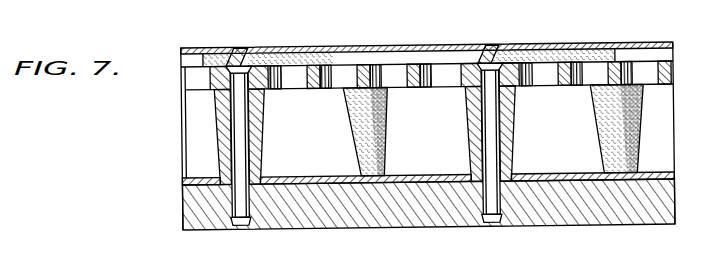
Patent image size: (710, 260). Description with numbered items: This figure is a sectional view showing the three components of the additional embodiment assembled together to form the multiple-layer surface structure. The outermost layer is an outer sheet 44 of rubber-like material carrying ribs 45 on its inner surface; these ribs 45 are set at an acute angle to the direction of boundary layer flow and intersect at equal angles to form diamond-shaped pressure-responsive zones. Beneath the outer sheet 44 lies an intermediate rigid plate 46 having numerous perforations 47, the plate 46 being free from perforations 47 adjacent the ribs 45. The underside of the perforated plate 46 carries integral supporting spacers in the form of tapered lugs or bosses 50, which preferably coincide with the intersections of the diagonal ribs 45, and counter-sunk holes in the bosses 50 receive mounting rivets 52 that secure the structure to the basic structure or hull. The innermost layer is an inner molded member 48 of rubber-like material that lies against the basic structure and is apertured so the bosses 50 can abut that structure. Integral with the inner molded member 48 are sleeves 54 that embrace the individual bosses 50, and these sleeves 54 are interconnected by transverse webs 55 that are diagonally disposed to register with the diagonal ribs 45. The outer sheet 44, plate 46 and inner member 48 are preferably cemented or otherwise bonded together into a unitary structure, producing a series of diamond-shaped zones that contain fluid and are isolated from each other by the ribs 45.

The outer sheet 44 is at (355, 46).
The ribs 45 is at (213, 49).
The intermediate rigid plate 46 is at (193, 92).
The perforations 47 is at (305, 74).
The inner molded member 48 is at (202, 177).
The tapered lugs or bosses 50 is at (212, 117).
The mounting rivets 52 is at (242, 206).
The sleeves 54 is at (265, 133).
The transverse webs 55 is at (202, 137).